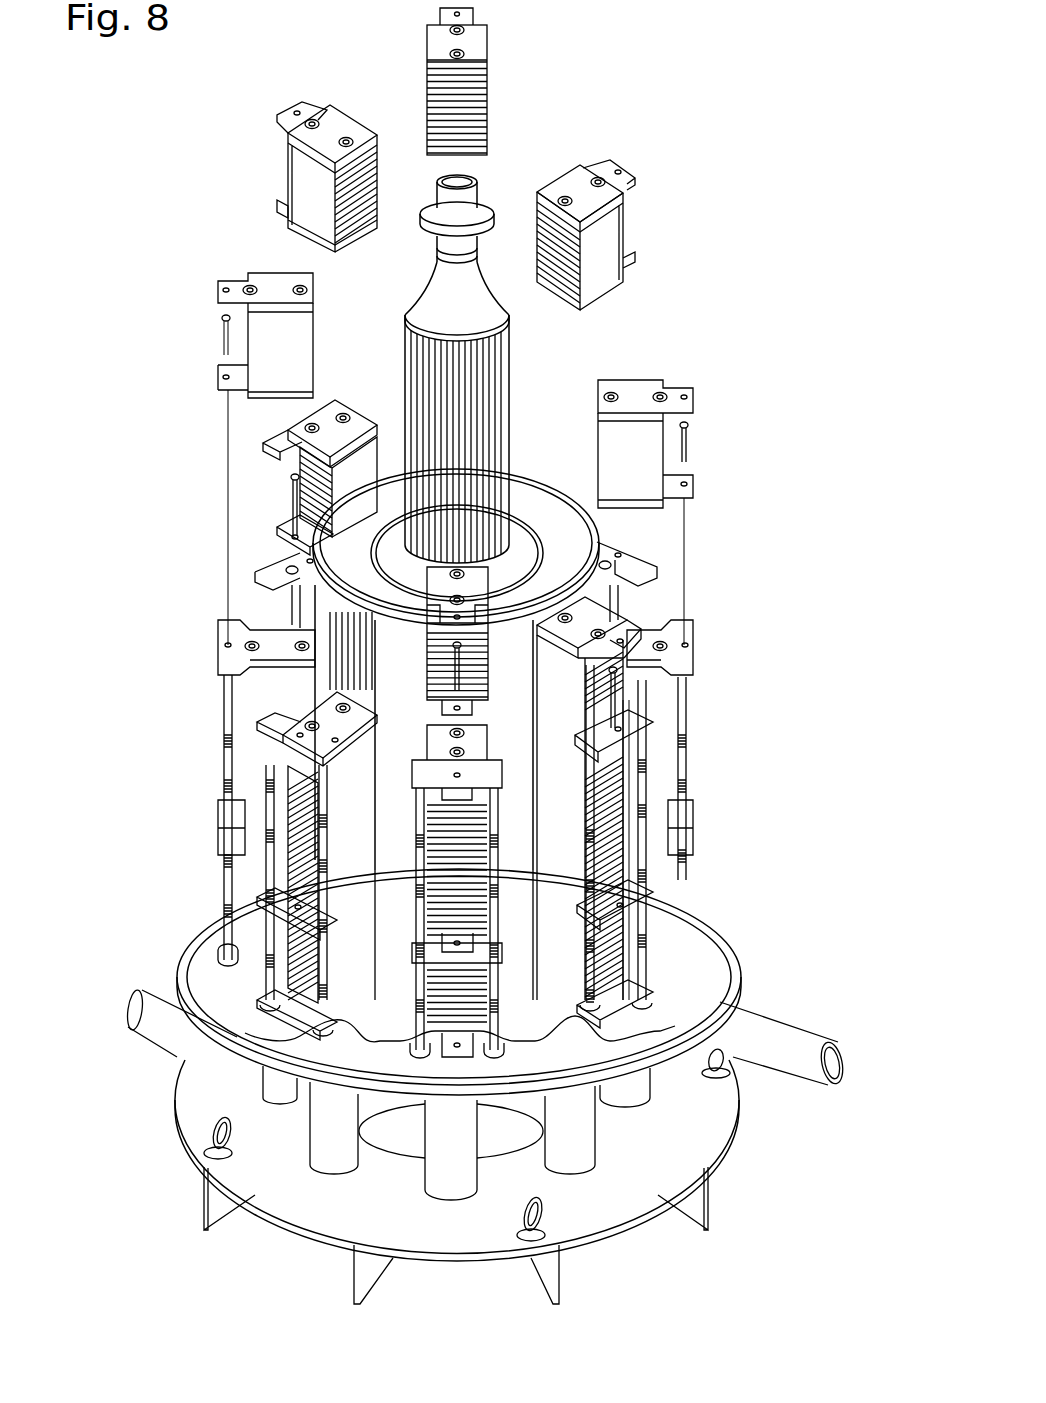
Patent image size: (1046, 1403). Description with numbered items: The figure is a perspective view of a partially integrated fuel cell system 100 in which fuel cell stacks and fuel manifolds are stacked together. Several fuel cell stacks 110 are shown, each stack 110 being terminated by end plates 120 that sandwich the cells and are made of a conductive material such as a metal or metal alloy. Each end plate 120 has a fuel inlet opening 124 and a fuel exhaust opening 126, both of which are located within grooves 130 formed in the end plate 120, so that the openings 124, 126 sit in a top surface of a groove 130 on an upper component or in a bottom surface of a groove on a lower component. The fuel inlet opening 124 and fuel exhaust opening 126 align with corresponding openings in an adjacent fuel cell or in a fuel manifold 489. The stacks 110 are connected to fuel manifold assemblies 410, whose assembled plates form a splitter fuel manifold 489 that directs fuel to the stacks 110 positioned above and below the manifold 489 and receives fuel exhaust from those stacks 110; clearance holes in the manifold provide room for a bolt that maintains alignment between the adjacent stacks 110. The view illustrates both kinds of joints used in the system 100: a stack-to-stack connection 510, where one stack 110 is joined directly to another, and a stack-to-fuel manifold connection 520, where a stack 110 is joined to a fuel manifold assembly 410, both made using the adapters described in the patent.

The partially integrated fuel cell system 100 is at (802, 208).
The fuel cell stack 110 is at (508, 90).
The end plate 120 is at (437, 40).
The fuel inlet opening 124 is at (603, 395).
The fuel exhaust opening 126 is at (662, 393).
The groove 130 is at (613, 393).
The fuel manifold assembly 410 is at (170, 607).
The splitter fuel manifold 489 is at (218, 657).
The stack-to-stack connection 510 is at (642, 818).
The stack-to-fuel manifold connection 520 is at (640, 714).